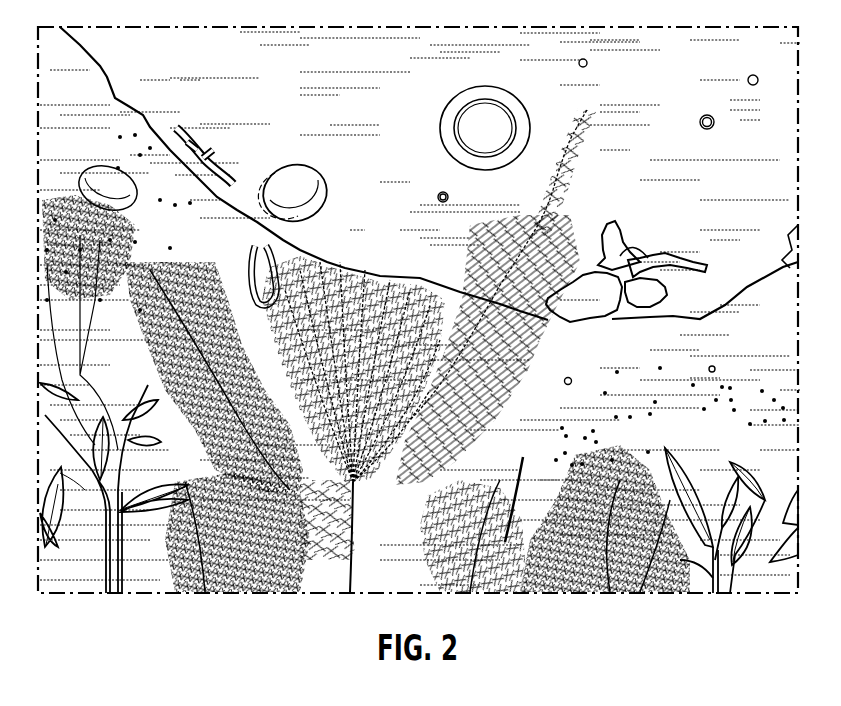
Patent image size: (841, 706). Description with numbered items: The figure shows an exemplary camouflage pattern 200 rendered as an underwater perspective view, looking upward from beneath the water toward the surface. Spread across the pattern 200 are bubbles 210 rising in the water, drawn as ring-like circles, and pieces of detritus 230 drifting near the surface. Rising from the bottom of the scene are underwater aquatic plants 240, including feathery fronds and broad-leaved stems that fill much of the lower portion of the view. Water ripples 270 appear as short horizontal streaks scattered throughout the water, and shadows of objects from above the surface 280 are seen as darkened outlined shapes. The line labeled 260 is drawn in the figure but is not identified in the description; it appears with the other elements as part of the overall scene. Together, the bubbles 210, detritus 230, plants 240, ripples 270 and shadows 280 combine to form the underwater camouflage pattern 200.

The camouflage pattern 200 is at (688, 69).
The bubbles 210 is at (517, 118).
The detritus 230 is at (672, 253).
The underwater aquatic plants 240 is at (532, 369).
The water surface line 260 is at (130, 106).
The water ripples 270 is at (350, 115).
The shadows of objects from above the surface 280 is at (203, 157).